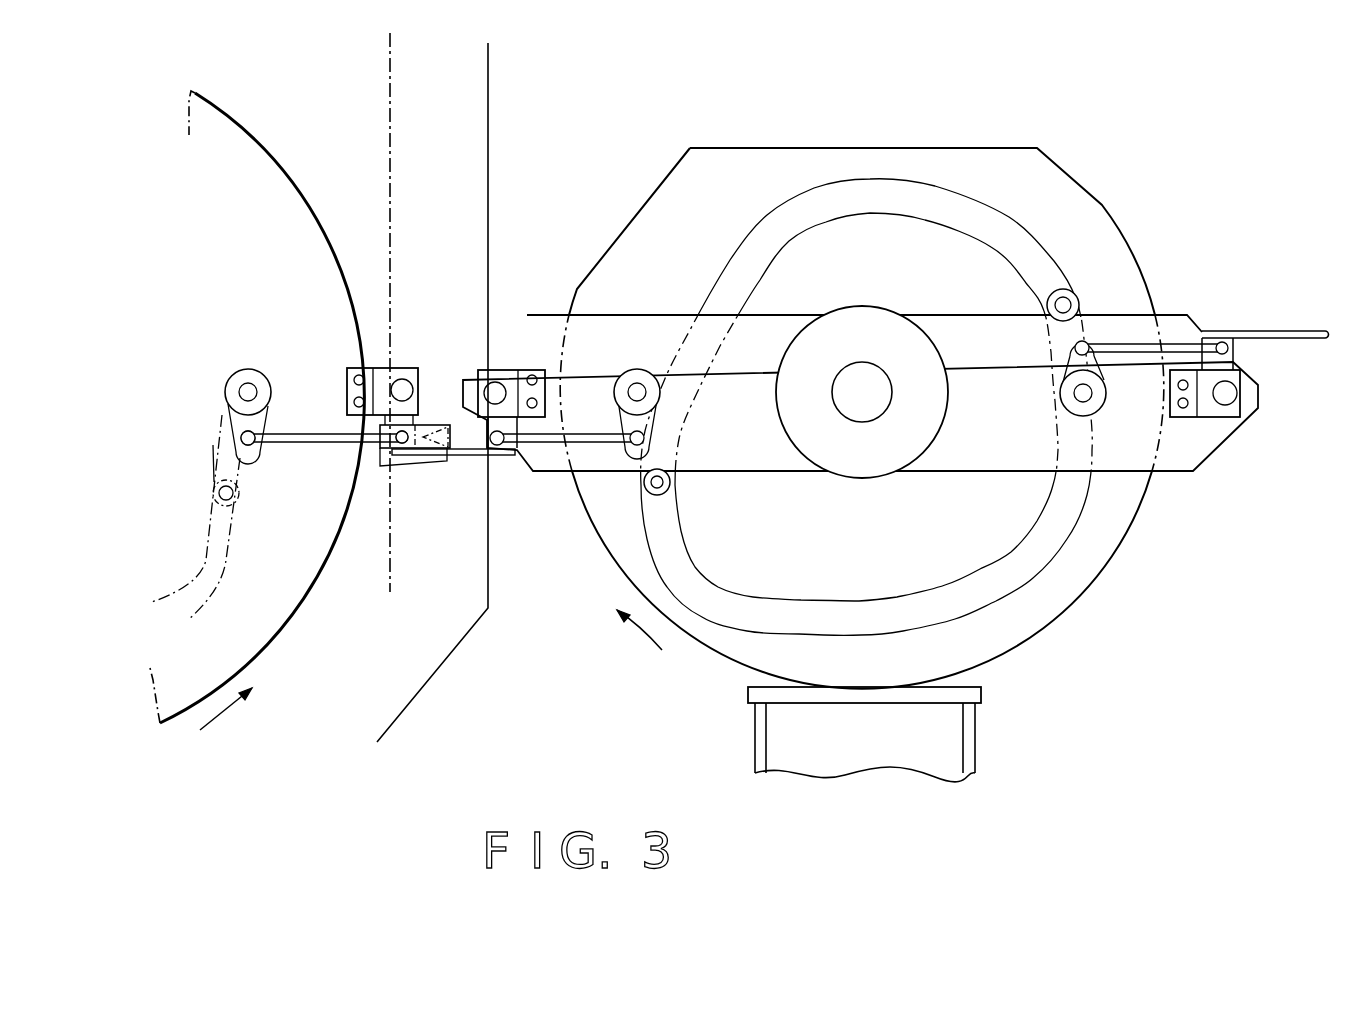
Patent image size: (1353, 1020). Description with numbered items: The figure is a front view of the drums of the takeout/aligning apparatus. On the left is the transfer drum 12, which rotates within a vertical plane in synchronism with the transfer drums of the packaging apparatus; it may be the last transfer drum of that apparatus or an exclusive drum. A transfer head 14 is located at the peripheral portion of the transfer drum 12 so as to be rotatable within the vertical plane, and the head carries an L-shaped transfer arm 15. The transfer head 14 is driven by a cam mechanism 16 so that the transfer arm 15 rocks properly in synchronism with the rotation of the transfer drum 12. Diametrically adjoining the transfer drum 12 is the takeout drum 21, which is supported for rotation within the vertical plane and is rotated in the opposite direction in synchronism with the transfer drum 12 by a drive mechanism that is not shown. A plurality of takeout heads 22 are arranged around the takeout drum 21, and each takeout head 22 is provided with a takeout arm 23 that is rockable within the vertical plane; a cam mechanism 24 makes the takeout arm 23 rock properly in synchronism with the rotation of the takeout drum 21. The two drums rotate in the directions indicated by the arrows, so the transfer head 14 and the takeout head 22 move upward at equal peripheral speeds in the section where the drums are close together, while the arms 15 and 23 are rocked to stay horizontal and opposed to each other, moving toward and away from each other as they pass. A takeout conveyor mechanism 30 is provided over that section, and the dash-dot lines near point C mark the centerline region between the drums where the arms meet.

The transfer drum 12 is at (252, 137).
The transfer head 14 is at (370, 484).
The transfer arm 15 is at (430, 463).
The cam mechanism 16 is at (240, 483).
The takeout drum 21 is at (1103, 215).
The takeout head 22 is at (538, 490).
The takeout arm 23 is at (467, 459).
The cam mechanism 24 is at (676, 423).
The takeout conveyor mechanism 30 is at (490, 123).
The cutting point C is at (433, 422).